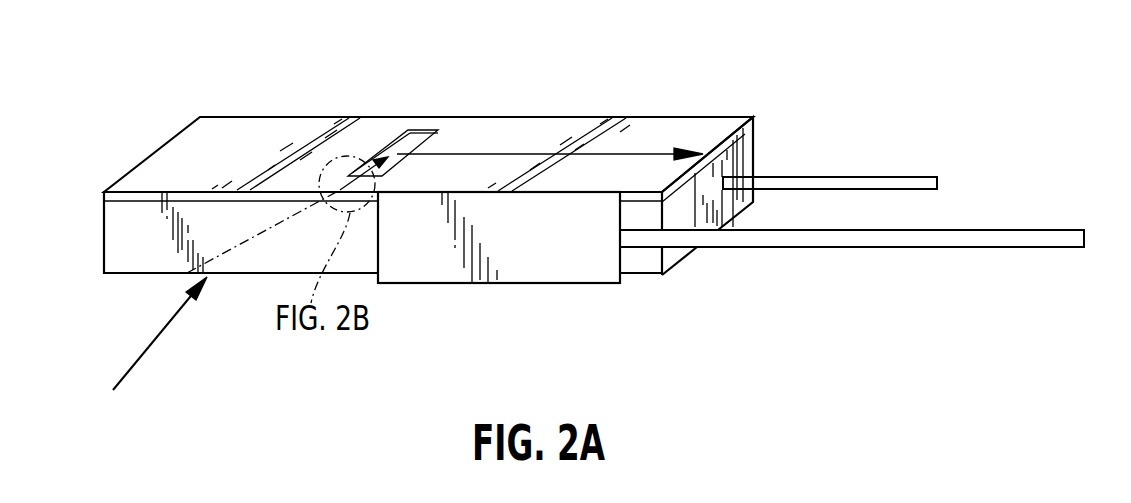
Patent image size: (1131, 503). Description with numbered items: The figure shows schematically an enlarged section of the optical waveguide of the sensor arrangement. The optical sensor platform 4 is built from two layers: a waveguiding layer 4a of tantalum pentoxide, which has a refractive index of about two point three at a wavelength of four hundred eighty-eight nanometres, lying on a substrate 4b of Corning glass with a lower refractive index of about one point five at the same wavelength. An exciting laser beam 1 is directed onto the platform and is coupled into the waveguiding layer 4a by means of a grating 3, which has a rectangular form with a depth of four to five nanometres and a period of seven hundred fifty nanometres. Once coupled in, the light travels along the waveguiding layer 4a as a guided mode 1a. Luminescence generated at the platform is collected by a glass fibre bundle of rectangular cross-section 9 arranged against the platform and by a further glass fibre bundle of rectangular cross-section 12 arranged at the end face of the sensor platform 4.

The exciting laser beam 1 is at (160, 340).
The guided mode 1a is at (613, 150).
The grating 3 is at (413, 127).
The optical sensor platform 4 is at (557, 184).
The waveguiding layer 4a is at (283, 130).
The substrate 4b is at (127, 234).
The glass fibre bundle of rectangular cross-section 9 is at (518, 285).
The glass fibre bundle of rectangular cross-section 12 is at (748, 158).